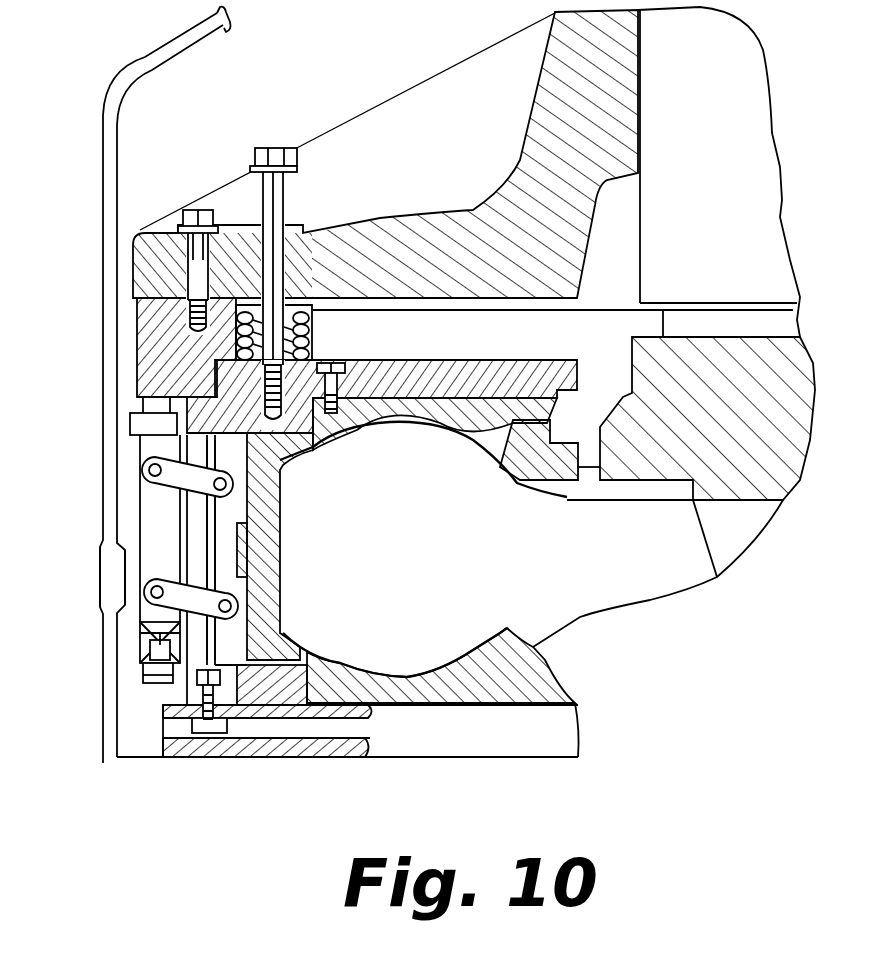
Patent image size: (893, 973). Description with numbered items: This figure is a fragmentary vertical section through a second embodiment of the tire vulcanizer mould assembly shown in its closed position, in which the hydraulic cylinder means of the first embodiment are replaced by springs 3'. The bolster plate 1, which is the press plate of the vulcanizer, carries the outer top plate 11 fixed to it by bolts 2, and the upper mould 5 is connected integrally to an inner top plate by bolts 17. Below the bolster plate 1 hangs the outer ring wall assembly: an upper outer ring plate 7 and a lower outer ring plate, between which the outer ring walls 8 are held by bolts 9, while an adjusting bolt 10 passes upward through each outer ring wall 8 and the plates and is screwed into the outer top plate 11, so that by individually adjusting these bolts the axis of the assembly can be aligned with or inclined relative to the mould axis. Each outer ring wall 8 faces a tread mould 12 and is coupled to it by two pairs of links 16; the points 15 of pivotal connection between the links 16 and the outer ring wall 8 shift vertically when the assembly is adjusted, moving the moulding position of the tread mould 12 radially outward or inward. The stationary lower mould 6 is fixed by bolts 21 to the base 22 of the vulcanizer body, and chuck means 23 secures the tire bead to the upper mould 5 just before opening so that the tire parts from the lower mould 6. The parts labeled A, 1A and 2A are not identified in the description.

The bolster plate 1 is at (130, 268).
The bolts 2 is at (195, 215).
The adjusting bolt A is at (278, 148).
The outer top plate 11 is at (135, 348).
The springs 3' is at (298, 336).
The bolts 17 is at (345, 363).
The upper outer ring plate 7 is at (130, 420).
The links 16 is at (148, 457).
The points of pivotal connection 15 is at (143, 477).
The tread moulds 12 is at (245, 513).
The rod 1A is at (205, 562).
The outer ring walls 8 is at (127, 608).
The bolts 9 is at (140, 647).
The adjusting bolt 10 is at (145, 683).
The upper mould 5 is at (423, 423).
The chuck means 23 is at (548, 490).
The bolts 21 is at (283, 633).
The bolt seat 2A is at (298, 647).
The lower mould 6 is at (373, 673).
The base 22 is at (433, 697).